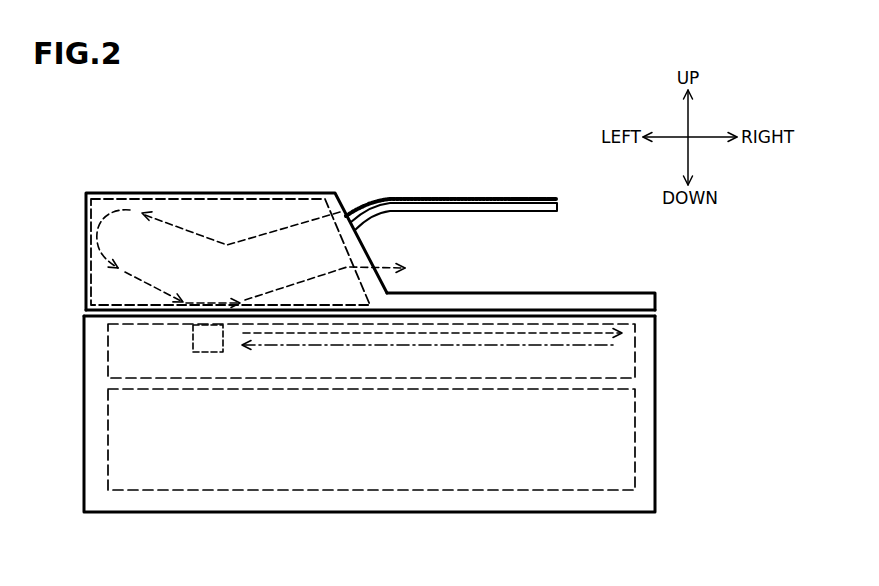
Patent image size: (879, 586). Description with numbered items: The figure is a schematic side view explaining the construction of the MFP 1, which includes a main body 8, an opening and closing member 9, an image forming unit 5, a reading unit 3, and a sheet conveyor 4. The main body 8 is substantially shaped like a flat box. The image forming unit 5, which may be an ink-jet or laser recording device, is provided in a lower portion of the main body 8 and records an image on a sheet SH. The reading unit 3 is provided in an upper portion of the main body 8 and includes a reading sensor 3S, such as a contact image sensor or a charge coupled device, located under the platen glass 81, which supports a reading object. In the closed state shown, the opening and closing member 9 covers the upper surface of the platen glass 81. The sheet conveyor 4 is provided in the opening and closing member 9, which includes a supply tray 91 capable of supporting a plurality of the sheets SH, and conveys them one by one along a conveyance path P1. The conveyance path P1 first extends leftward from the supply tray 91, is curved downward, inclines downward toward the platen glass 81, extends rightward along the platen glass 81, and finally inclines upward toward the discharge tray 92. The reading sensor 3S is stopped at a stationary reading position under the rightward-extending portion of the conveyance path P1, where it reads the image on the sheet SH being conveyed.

The MFP 1 is at (360, 170).
The opening and closing member 9 is at (75, 213).
The sheet conveyor 4 is at (238, 193).
The conveyance path P1 is at (415, 268).
The sheet SH is at (417, 198).
The supply tray 91 is at (548, 196).
The discharge tray 92 is at (553, 291).
The platen glass 81 is at (597, 313).
The main body 8 is at (75, 440).
The reading unit 3 is at (620, 362).
The reading sensor 3S is at (207, 343).
The image forming unit 5 is at (548, 462).